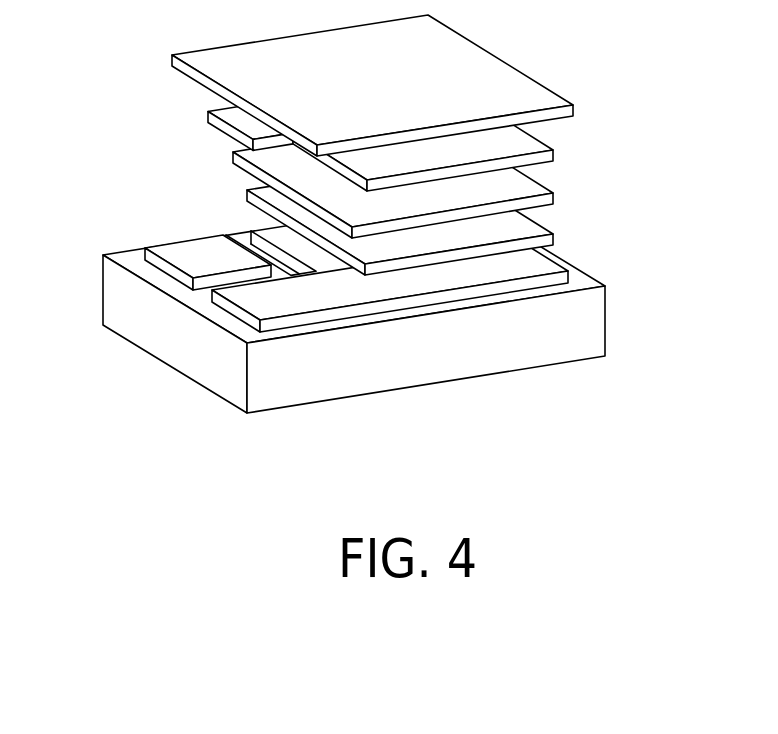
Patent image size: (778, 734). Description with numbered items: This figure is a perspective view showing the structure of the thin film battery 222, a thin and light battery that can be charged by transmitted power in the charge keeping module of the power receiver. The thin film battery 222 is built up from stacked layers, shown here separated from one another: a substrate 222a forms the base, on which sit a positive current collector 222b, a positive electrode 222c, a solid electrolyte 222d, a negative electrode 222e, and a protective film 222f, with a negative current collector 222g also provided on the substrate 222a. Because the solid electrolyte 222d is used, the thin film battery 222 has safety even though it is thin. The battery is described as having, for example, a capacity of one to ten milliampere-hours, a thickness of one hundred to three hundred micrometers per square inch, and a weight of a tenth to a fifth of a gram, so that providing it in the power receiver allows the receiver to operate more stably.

The thin film battery 222 is at (373, 230).
The substrate 222a is at (607, 331).
The positive current collector 222b is at (568, 279).
The positive electrode 222c is at (555, 240).
The solid electrolyte 222d is at (555, 199).
The negative electrode 222e is at (555, 157).
The protective film 222f is at (560, 91).
The negative current collector 222g is at (143, 249).